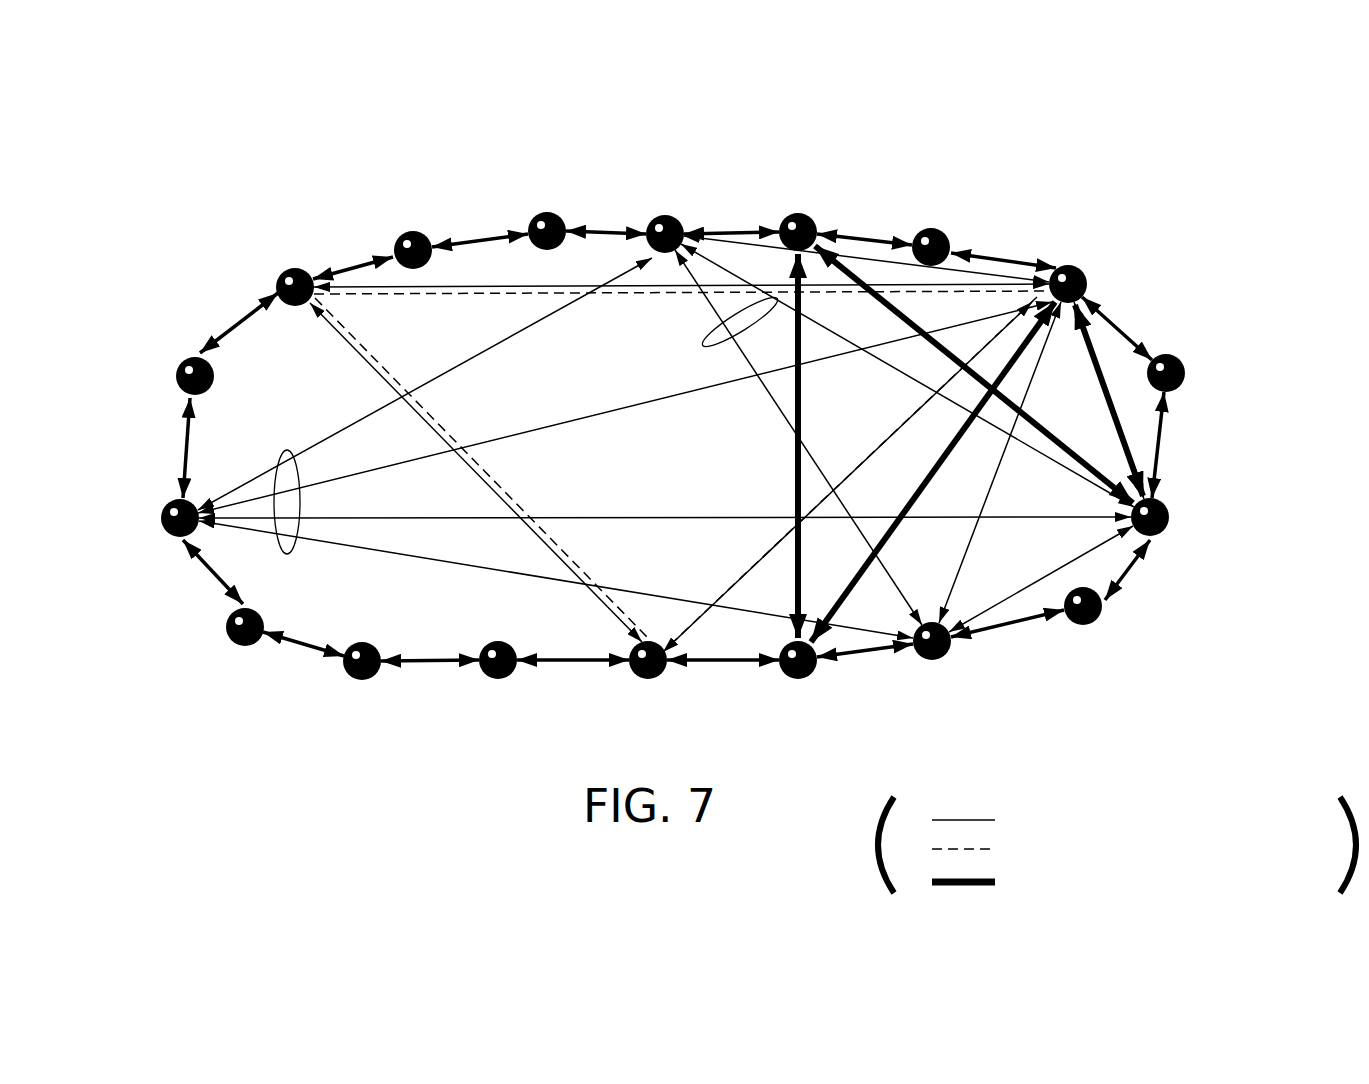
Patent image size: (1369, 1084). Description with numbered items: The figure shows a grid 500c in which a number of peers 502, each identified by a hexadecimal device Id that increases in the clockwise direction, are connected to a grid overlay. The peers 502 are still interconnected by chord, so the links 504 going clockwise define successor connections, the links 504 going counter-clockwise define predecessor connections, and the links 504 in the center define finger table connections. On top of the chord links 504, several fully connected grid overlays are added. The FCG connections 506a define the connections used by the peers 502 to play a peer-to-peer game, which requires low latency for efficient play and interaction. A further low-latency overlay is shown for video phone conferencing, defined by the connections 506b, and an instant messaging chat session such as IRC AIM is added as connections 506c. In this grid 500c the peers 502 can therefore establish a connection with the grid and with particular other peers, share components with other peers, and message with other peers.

The grid 500c is at (1108, 146).
The peer 502 is at (933, 227).
The link 504 is at (685, 447).
The FCG connection 506a is at (671, 437).
The connection 506b is at (679, 447).
The IRC AIM Y! overlay connection 506c is at (929, 444).